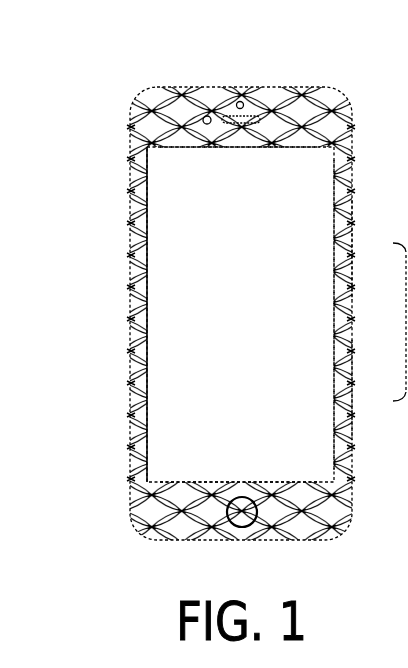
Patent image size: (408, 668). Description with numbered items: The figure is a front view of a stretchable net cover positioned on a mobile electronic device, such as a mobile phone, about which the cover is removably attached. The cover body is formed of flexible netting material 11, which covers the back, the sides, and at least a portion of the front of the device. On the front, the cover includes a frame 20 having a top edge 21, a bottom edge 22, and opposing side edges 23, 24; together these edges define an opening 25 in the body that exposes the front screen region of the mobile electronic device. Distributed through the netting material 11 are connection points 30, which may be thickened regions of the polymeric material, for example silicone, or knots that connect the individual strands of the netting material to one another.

The frame 20 is at (130, 190).
The opening 25 is at (256, 319).
The top edge 21 is at (223, 148).
The bottom edge 22 is at (223, 482).
The side edge 23 is at (148, 253).
The side edge 24 is at (333, 339).
The netting material 11 is at (353, 246).
The connection points 30 is at (353, 388).